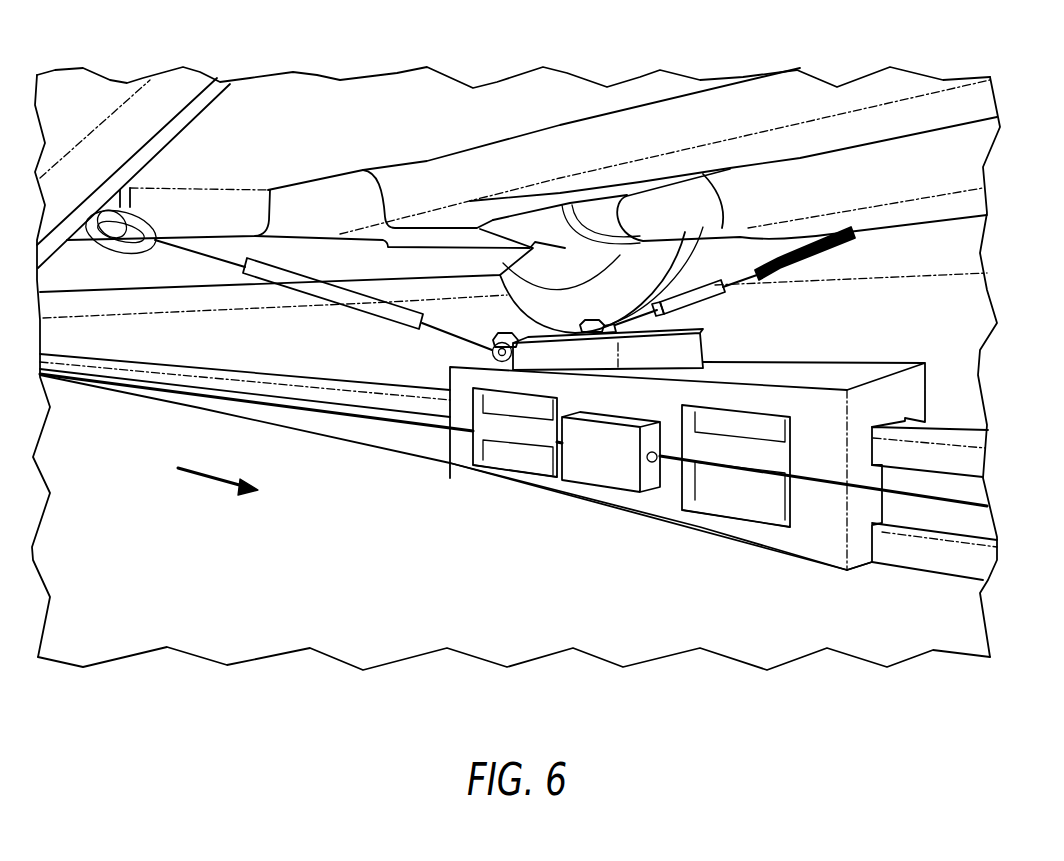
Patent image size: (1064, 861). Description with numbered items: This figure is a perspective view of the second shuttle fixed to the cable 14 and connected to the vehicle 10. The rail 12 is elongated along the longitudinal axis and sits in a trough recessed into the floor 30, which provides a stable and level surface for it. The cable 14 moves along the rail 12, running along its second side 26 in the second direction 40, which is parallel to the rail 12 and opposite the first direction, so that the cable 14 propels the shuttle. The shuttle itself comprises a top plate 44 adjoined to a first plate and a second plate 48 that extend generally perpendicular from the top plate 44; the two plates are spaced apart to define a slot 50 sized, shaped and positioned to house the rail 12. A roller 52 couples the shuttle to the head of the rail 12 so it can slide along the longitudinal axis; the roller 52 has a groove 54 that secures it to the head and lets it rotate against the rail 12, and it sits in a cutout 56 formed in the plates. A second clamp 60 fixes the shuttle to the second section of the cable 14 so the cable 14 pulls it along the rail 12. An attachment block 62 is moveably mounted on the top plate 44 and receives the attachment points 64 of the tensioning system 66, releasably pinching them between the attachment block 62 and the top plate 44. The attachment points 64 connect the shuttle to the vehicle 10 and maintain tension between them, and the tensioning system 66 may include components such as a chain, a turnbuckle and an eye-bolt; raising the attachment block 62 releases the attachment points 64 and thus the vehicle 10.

The vehicle 10 is at (288, 100).
The rail 12 is at (925, 578).
The cable 14 is at (960, 507).
The second side 26 is at (390, 452).
The floor 30 is at (953, 393).
The second direction 40 is at (202, 475).
The top plate 44 is at (857, 373).
The second plate 48 is at (820, 528).
The slot 50 is at (905, 420).
The roller 52 is at (500, 450).
The groove 54 is at (532, 423).
The cutout 56 is at (550, 473).
The second clamp 60 is at (597, 470).
The attachment block 62 is at (700, 343).
The attachment point 64 is at (587, 320).
The tensioning system 66 is at (287, 279).